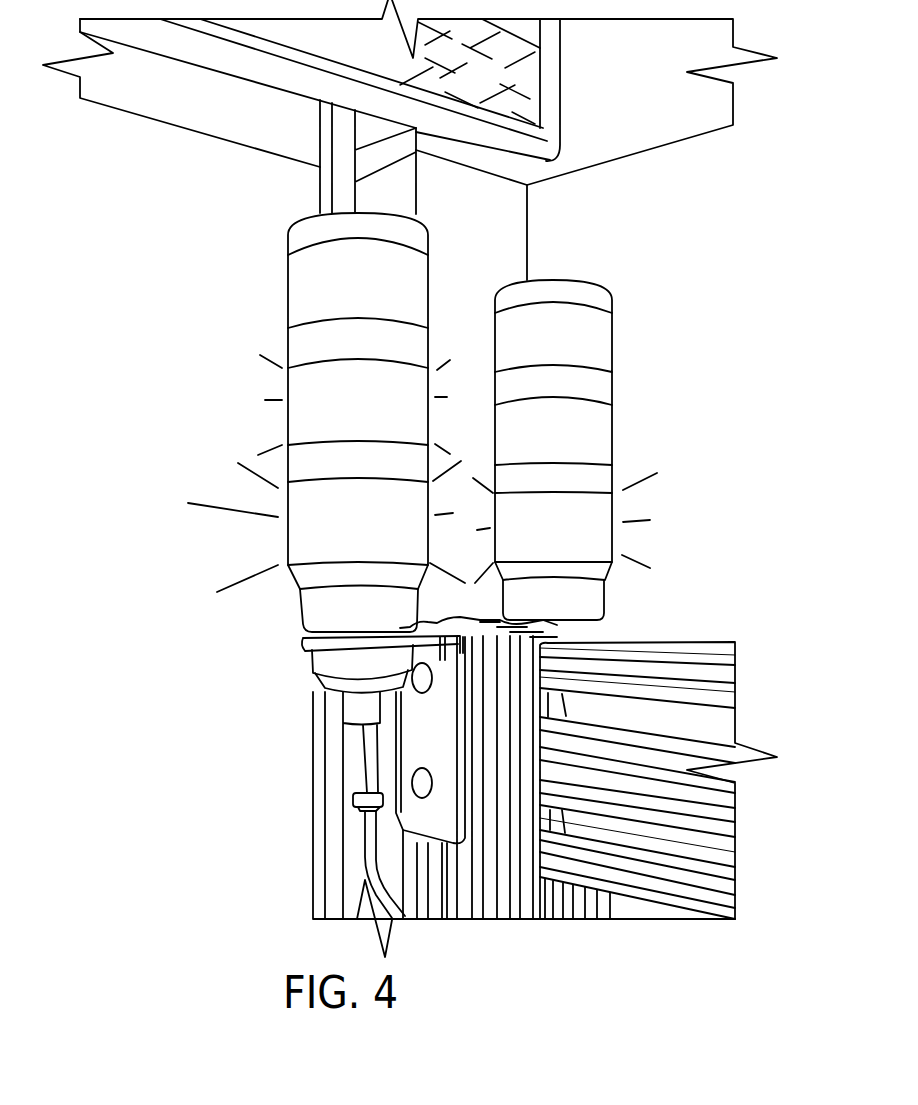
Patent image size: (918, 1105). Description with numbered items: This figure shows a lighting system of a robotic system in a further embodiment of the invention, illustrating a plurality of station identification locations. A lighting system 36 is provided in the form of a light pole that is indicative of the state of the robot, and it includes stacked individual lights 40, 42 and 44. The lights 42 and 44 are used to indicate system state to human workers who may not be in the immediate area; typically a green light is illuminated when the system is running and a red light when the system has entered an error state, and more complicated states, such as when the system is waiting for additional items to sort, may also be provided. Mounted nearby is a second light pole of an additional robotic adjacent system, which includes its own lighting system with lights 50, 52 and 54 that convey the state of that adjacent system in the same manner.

The lighting system 36 is at (220, 398).
The first indicator light segment 40 is at (338, 546).
The individual light 42 is at (338, 426).
The individual light 44 is at (338, 306).
The light 50 is at (541, 543).
The light 52 is at (541, 445).
The light 54 is at (541, 346).